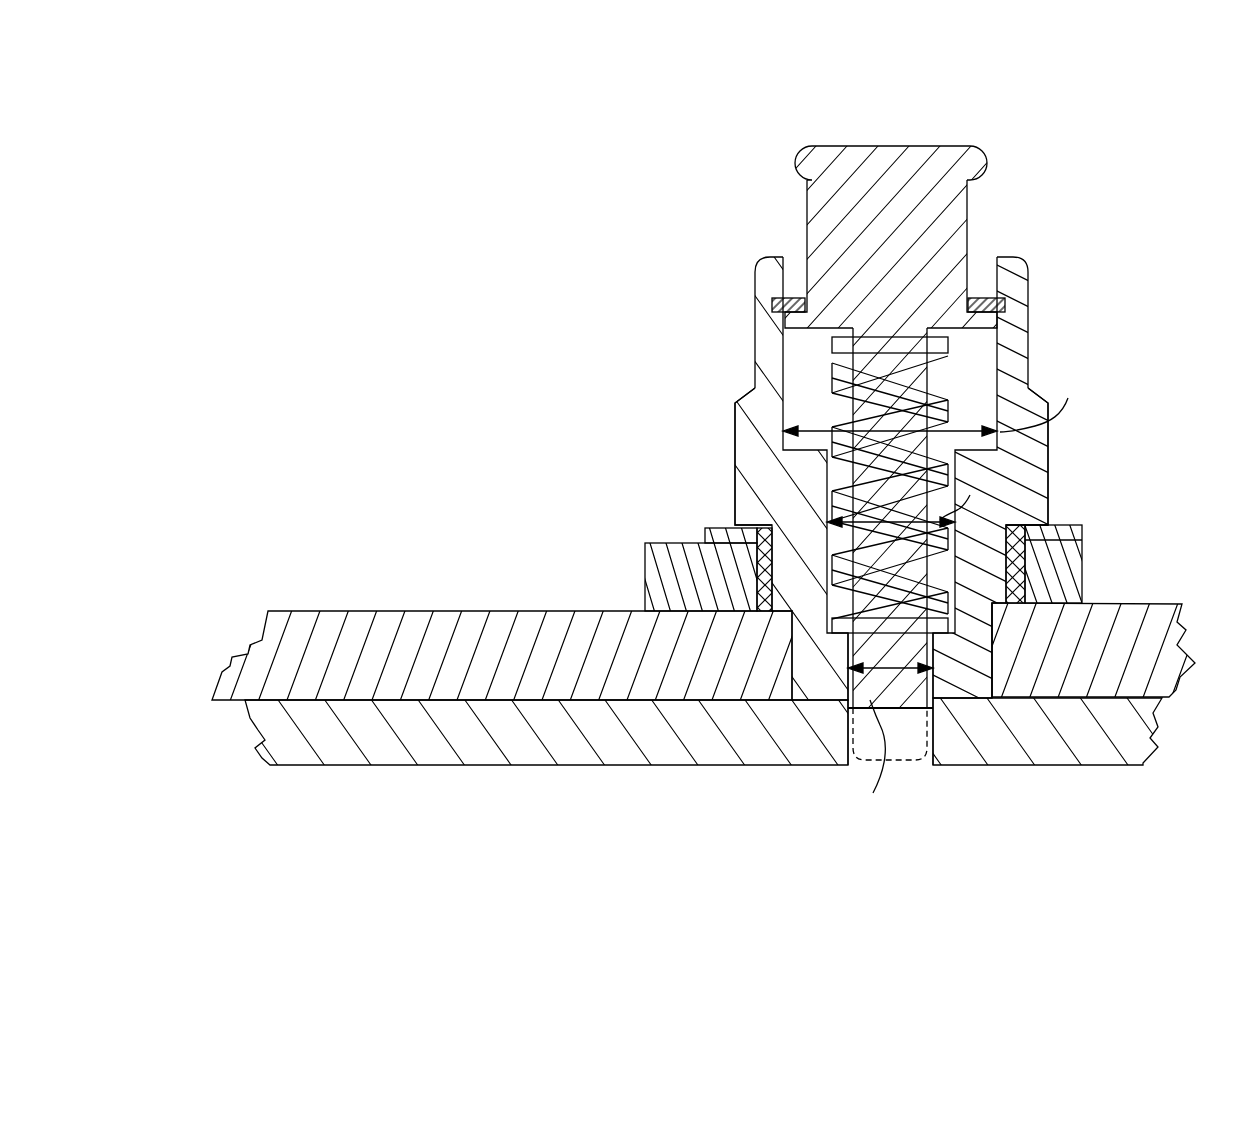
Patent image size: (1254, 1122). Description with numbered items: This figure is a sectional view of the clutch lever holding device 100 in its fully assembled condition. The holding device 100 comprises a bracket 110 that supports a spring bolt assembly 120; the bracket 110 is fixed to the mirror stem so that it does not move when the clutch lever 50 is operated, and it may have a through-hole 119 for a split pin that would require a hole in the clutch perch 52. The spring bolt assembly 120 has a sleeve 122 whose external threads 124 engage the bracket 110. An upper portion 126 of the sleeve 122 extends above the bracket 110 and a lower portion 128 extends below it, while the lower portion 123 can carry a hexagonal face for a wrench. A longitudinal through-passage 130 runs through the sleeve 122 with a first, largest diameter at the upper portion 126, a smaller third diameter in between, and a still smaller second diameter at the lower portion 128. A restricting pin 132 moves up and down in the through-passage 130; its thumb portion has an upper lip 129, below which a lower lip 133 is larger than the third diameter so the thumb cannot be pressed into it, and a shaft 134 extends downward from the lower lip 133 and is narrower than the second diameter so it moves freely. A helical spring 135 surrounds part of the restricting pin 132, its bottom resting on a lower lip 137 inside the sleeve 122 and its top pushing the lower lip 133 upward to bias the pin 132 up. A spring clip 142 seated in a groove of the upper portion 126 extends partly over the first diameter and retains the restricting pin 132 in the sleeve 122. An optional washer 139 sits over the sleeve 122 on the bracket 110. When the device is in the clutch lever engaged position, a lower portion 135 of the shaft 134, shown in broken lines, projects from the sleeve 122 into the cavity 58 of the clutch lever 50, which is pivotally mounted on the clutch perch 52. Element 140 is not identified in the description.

The holding device 100 is at (627, 180).
The clutch lever 50 is at (1161, 742).
The clutch perch 52 is at (1153, 603).
The cavity 58 is at (848, 754).
The bracket 110 is at (1087, 571).
The through-hole 119 is at (757, 566).
The spring bolt assembly 120 is at (937, 146).
The sleeve 122 is at (1047, 455).
The lower portion of sleeve 123 is at (1030, 286).
The external threads 124 is at (775, 556).
The upper portion of sleeve 126 is at (735, 432).
The lower portion of sleeve 128 is at (993, 680).
The upper lip 129 is at (800, 146).
The through-passage 130 is at (978, 351).
The restricting pin 132 is at (806, 240).
The lower lip 133 is at (773, 300).
The shaft 134 is at (840, 463).
The helical spring 135 is at (842, 371).
The lower lip 137 is at (846, 640).
The washer 139 is at (704, 537).
The upper wall of valve body 140 is at (755, 330).
The spring clip 142 is at (985, 298).